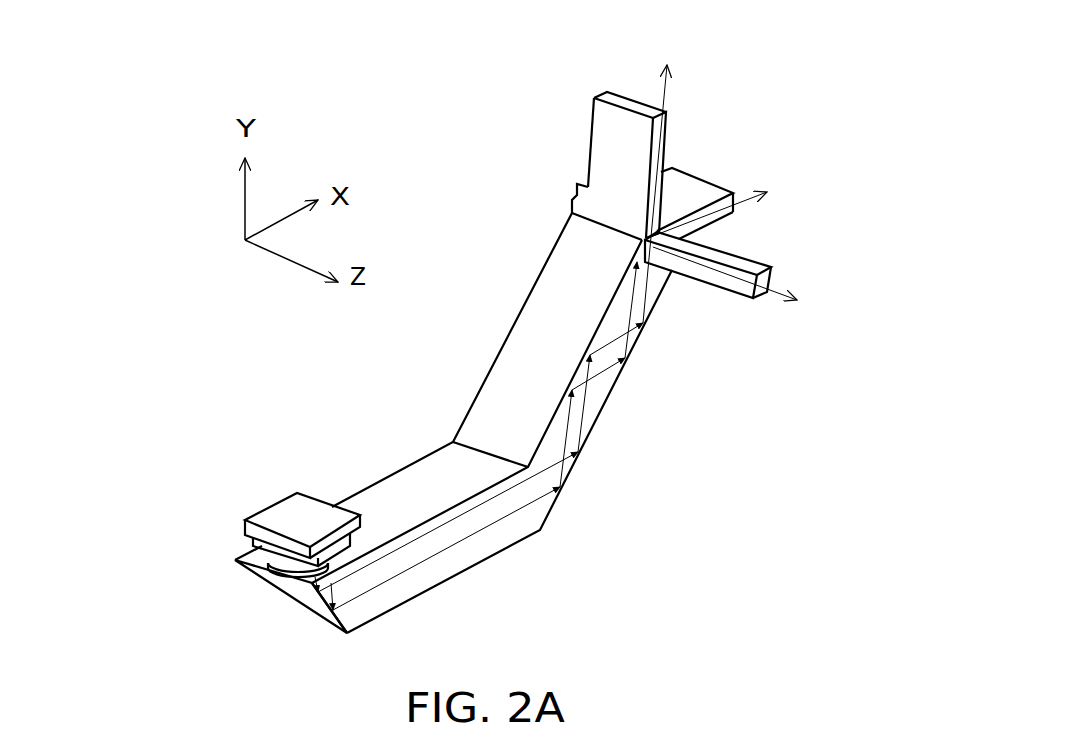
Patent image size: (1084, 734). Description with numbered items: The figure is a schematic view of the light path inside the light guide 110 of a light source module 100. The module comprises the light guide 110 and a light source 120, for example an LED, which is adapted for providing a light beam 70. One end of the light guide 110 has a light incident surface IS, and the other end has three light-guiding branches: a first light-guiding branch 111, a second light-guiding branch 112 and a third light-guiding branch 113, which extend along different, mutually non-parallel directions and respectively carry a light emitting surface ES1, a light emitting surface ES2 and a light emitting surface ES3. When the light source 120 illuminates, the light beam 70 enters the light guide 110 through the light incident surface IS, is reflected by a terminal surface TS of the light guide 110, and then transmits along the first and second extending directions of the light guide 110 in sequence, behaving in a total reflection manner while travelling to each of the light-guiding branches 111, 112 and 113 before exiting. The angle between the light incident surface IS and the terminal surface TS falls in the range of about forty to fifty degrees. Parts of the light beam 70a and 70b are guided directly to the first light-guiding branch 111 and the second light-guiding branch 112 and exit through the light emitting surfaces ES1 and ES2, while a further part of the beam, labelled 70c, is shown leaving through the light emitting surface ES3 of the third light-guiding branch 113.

The light source module 100 is at (778, 647).
The light guide 110 is at (544, 356).
The first light-guiding branch 111 is at (709, 173).
The second light-guiding branch 112 is at (594, 143).
The third light-guiding branch 113 is at (751, 288).
The light source 120 is at (282, 513).
The light beam 70 is at (320, 590).
The part of the light beam 70a is at (778, 205).
The part of the light beam 70b is at (667, 93).
The third emitted light beam 70c is at (775, 297).
The light incident surface IS is at (293, 578).
The terminal surface TS is at (340, 617).
The light emitting surface ES1 is at (721, 187).
The light emitting surface ES2 is at (618, 95).
The light emitting surface ES3 is at (768, 282).